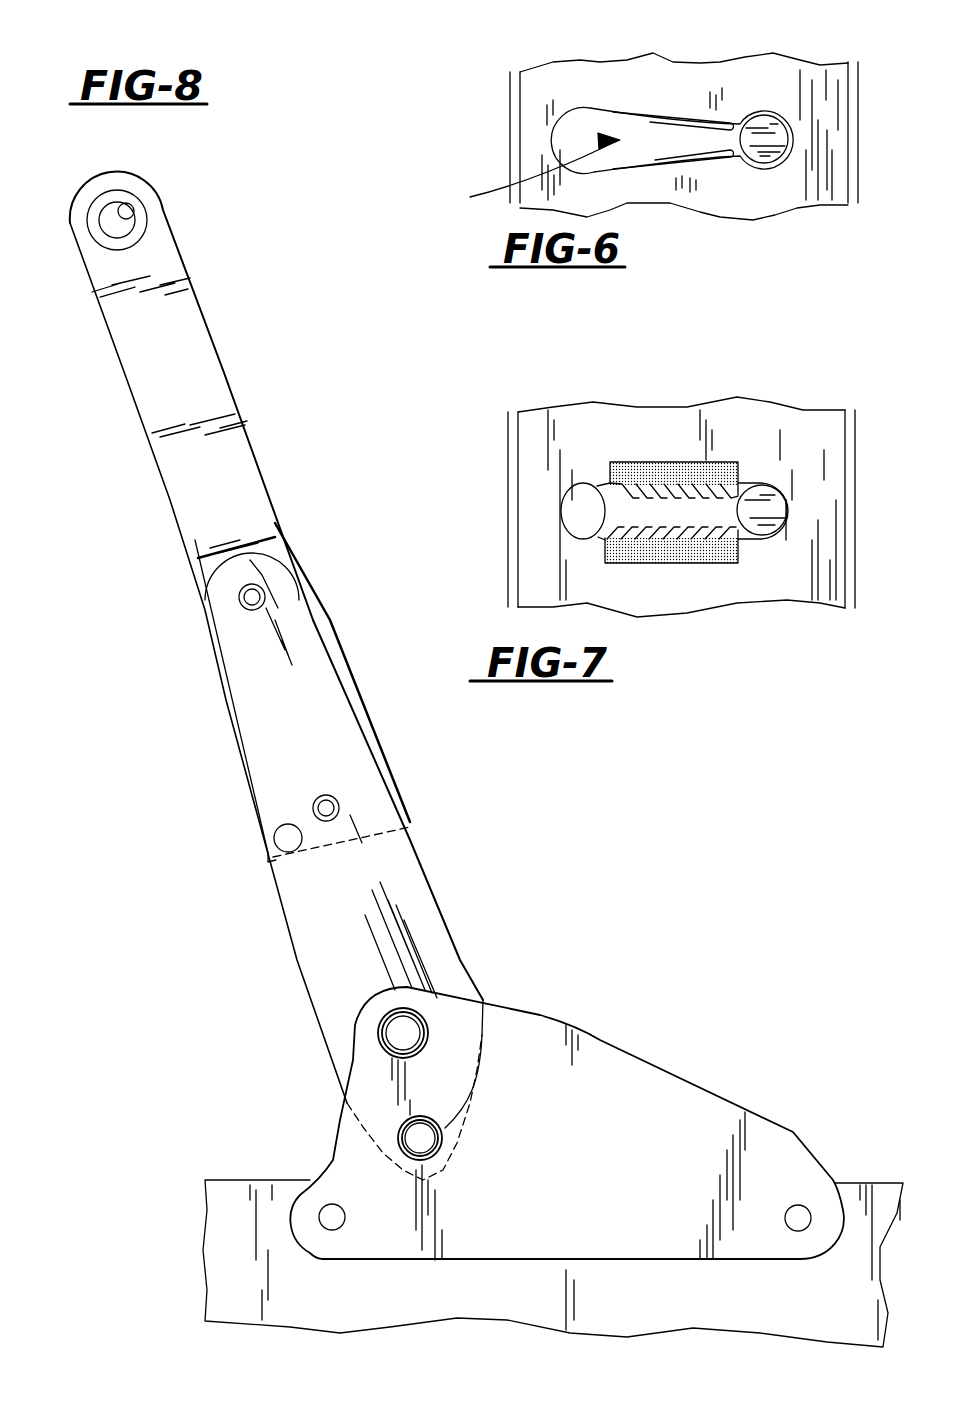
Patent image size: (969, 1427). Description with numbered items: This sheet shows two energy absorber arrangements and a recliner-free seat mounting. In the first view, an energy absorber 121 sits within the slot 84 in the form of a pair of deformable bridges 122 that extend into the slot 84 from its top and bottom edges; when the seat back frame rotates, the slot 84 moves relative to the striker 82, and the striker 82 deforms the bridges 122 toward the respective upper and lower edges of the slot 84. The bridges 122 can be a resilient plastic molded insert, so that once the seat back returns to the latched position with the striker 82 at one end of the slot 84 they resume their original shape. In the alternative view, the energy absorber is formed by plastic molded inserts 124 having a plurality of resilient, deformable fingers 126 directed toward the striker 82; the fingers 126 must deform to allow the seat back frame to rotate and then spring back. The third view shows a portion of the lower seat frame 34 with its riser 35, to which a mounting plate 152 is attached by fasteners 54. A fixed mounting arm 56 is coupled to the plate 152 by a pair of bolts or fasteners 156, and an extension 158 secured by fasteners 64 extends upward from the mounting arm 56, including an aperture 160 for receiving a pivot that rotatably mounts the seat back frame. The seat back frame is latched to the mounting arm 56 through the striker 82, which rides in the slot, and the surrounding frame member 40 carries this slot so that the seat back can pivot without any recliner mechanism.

In FIG. 8, the lower seat frame 34 is at (180, 1228).
In FIG. 8, the riser 35 is at (230, 1178).
In FIG. 6, the lever body 40 is at (590, 62).
In FIG. 7, the lever body 40 is at (508, 457).
In FIG. 8, the fasteners 54 is at (343, 1223).
In FIG. 8, the mounting arm 56 is at (450, 920).
In FIG. 8, the fasteners 64 is at (267, 597).
In FIG. 6, the striker 82 is at (780, 123).
In FIG. 7, the striker 82 is at (780, 483).
In FIG. 8, the striker 82 is at (273, 857).
In FIG. 6, the slot 84 is at (563, 133).
In FIG. 7, the slot 84 is at (570, 527).
In FIG. 6, the energy absorber 121 is at (526, 169).
In FIG. 6, the deformable bridges 122 is at (713, 117).
In FIG. 7, the plastic molded inserts 124 is at (650, 460).
In FIG. 7, the fingers 126 is at (635, 493).
In FIG. 8, the mounting plate 152 is at (717, 1090).
In FIG. 8, the fasteners 156 is at (427, 1032).
In FIG. 8, the extension 158 is at (253, 437).
In FIG. 8, the aperture 160 is at (127, 217).